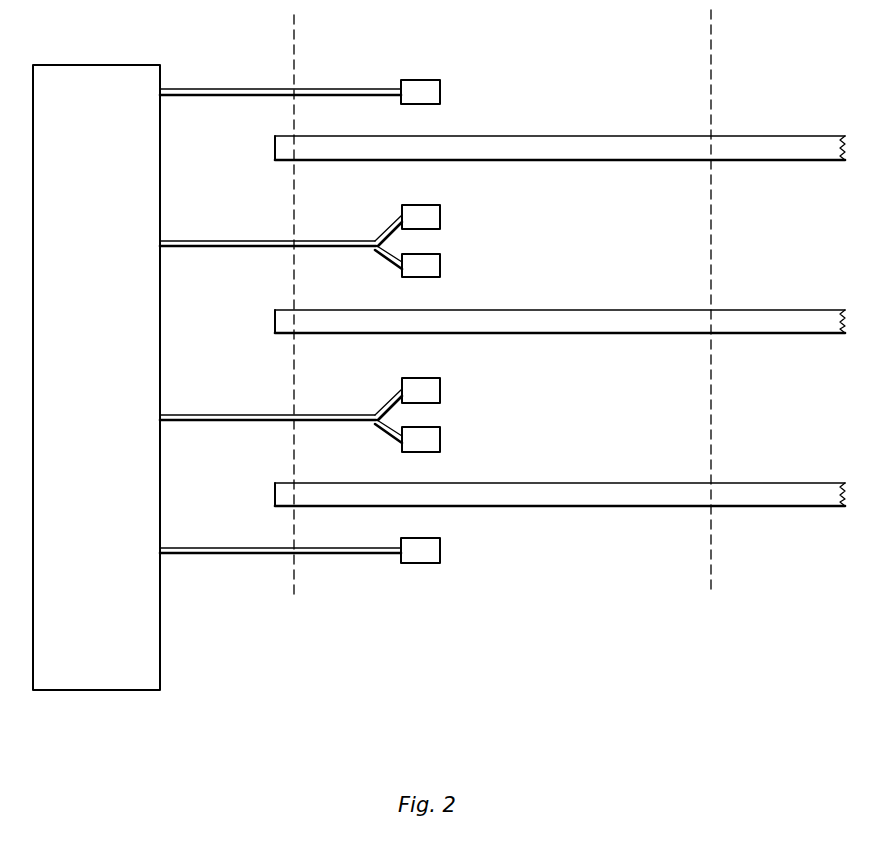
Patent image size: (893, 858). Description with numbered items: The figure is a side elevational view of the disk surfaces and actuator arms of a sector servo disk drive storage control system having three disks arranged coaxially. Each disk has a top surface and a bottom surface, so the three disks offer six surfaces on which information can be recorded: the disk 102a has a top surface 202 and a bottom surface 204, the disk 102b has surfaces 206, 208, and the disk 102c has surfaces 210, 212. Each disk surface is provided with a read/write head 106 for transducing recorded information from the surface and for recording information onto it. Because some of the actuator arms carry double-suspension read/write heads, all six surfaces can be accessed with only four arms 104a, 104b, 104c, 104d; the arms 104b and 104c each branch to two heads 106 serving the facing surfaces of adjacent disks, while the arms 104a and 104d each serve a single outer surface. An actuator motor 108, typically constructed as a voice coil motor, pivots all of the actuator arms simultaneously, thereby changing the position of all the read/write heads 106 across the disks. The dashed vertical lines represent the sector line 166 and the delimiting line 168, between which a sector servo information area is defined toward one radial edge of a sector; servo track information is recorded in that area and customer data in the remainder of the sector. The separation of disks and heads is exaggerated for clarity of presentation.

The actuator motor 108 is at (94, 65).
The sector line 166 is at (292, 37).
The delimiting line 168 is at (709, 35).
The first actuator arm 104a is at (178, 89).
The second actuator arm 104b is at (182, 240).
The third actuator arm 104c is at (182, 414).
The fourth actuator arm 104d is at (178, 548).
The read/write head 106 is at (441, 92).
The first disk 102a is at (518, 151).
The second disk 102b is at (518, 324).
The third disk 102c is at (518, 497).
The top surface 202 is at (785, 136).
The bottom surface 204 is at (766, 162).
The top surface 206 is at (785, 310).
The bottom surface 208 is at (767, 335).
The top surface 210 is at (785, 483).
The bottom surface 212 is at (767, 508).